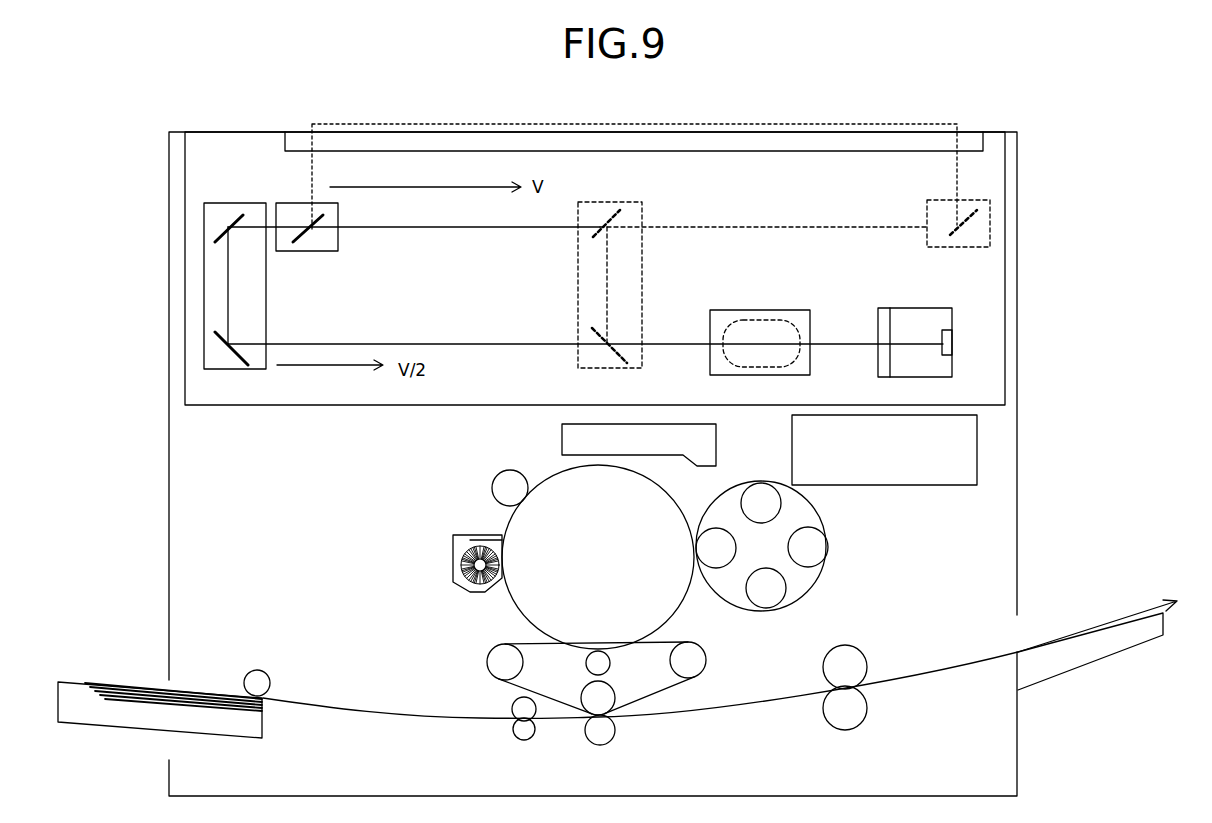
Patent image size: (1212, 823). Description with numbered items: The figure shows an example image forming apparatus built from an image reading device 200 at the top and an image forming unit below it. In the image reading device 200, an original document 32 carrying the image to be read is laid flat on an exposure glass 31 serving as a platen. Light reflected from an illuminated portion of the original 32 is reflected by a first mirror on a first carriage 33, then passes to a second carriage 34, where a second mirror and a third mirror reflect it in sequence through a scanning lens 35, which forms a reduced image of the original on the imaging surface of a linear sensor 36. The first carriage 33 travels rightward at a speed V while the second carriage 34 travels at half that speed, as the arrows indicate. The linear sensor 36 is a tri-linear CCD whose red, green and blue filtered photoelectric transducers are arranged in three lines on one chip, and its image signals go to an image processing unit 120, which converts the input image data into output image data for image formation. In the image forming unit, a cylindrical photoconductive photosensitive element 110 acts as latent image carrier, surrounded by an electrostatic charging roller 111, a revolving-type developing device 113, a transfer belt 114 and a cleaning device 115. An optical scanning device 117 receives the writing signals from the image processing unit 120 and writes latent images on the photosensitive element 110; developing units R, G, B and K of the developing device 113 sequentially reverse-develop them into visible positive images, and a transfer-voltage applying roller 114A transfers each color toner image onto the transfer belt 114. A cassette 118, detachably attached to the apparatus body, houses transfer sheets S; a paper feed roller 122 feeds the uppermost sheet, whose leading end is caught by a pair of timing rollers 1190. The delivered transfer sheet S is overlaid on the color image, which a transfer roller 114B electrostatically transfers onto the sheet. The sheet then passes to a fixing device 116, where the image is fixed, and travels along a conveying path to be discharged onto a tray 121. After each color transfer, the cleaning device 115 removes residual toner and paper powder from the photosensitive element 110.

The exposure glass 31 is at (286, 151).
The original document 32 is at (388, 126).
The first carriage 33 is at (345, 236).
The second carriage 34 is at (266, 303).
The scanning lens 35 is at (785, 310).
The linear sensor 36 is at (925, 310).
The image reading device 200 is at (747, 196).
The photosensitive element 110 is at (608, 564).
The electrostatic charging roller 111 is at (497, 483).
The developing device 113 is at (801, 575).
The transfer belt 114 is at (692, 682).
The transfer-voltage applying roller 114A is at (603, 658).
The transfer roller 114B is at (607, 733).
The cleaning device 115 is at (455, 565).
The fixing device 116 is at (858, 711).
The optical scanning device 117 is at (577, 434).
The cassette 118 is at (215, 727).
The pair of timing rollers 1190 is at (520, 715).
The image processing unit 120 is at (890, 487).
The tray 121 is at (1075, 665).
The paper feed roller 122 is at (259, 672).
The transfer sheet S is at (212, 688).